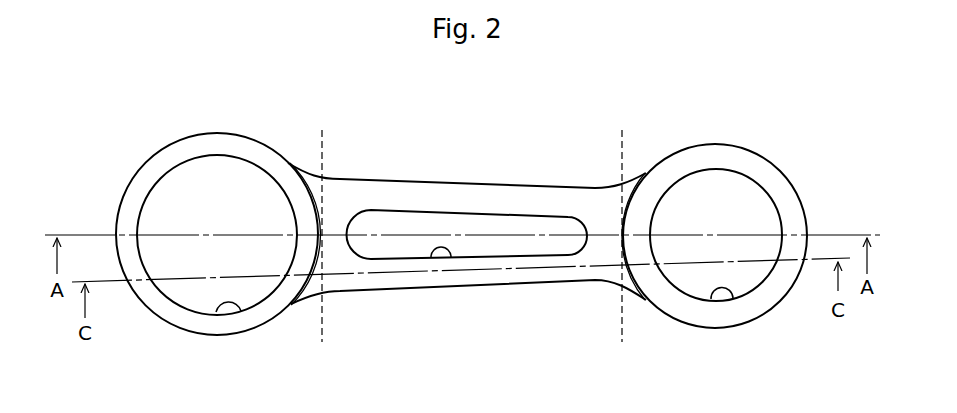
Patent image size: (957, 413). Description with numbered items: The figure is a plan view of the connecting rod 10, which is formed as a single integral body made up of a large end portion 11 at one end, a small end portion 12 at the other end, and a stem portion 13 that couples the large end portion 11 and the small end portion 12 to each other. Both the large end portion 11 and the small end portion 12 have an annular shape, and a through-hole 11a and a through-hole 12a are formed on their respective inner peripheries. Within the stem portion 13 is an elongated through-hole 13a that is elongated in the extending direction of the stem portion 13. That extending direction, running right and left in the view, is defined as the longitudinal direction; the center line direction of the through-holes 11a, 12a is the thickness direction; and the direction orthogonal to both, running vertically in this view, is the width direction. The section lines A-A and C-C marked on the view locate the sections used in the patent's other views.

The connecting rod 10 is at (574, 141).
The large end portion 11 is at (166, 157).
The through-hole 11a is at (237, 300).
The small end portion 12 is at (729, 151).
The through-hole 12a is at (717, 292).
The stem portion 13 is at (507, 193).
The elongated through-hole 13a is at (437, 251).